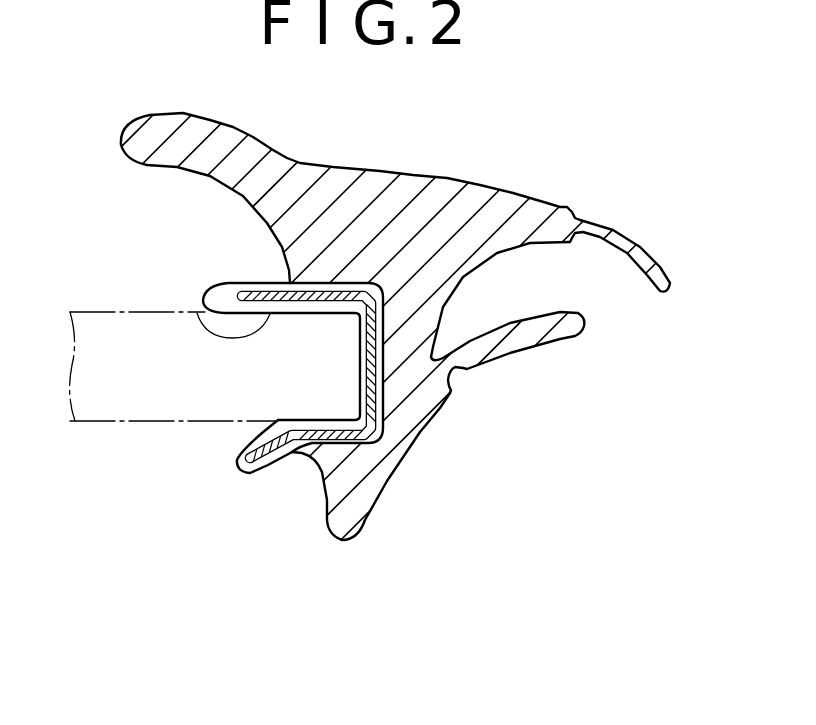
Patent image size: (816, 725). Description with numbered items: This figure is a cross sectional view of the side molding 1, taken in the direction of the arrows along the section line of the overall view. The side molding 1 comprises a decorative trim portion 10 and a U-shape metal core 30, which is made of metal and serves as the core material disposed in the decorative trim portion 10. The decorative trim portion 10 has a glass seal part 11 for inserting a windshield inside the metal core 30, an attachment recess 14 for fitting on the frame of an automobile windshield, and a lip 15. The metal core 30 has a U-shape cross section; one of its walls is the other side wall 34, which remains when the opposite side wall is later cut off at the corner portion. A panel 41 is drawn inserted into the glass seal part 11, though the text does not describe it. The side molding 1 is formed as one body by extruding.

The side molding 1 is at (450, 172).
The decorative trim portion 10 is at (503, 212).
The glass seal part 11 is at (197, 313).
The attachment recess 14 is at (568, 282).
The lip 15 is at (647, 252).
The metal core 30 is at (277, 292).
The other side wall 34 is at (302, 452).
The panel 41 is at (170, 418).